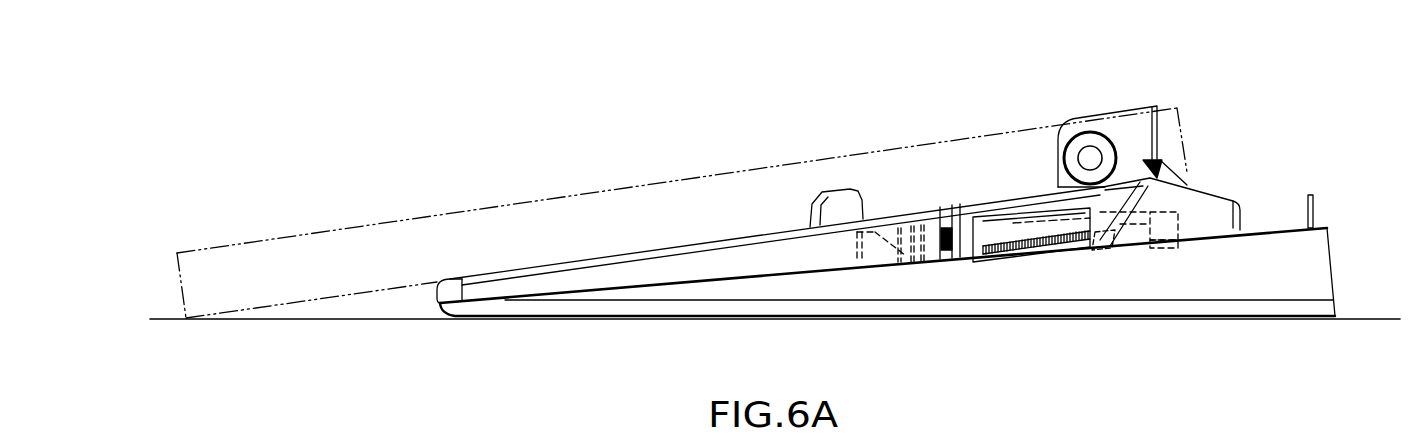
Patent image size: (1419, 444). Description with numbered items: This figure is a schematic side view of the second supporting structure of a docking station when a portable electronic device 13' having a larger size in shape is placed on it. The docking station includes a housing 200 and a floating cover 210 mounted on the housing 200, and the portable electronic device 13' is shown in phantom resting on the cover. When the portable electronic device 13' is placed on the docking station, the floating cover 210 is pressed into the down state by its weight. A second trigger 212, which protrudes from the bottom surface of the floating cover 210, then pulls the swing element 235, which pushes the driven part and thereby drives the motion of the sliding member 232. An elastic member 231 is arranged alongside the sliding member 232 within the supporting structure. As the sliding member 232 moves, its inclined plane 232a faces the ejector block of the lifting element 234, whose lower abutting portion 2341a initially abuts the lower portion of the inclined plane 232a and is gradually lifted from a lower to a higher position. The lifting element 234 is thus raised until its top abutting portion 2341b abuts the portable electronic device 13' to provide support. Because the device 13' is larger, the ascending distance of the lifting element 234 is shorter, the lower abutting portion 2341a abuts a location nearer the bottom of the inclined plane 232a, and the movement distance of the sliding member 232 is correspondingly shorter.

The portable electronic device 13' is at (724, 190).
The housing 200 is at (1300, 268).
The floating cover 210 is at (648, 270).
The second trigger 212 is at (930, 263).
The elastic member 231 is at (1020, 250).
The sliding member 232 is at (1130, 250).
The inclined plane 232a is at (1110, 180).
The lifting element 234 is at (1185, 187).
The lower abutting portion 2341a is at (1110, 230).
The top abutting portion 2341b is at (1162, 165).
The swing element 235 is at (878, 262).